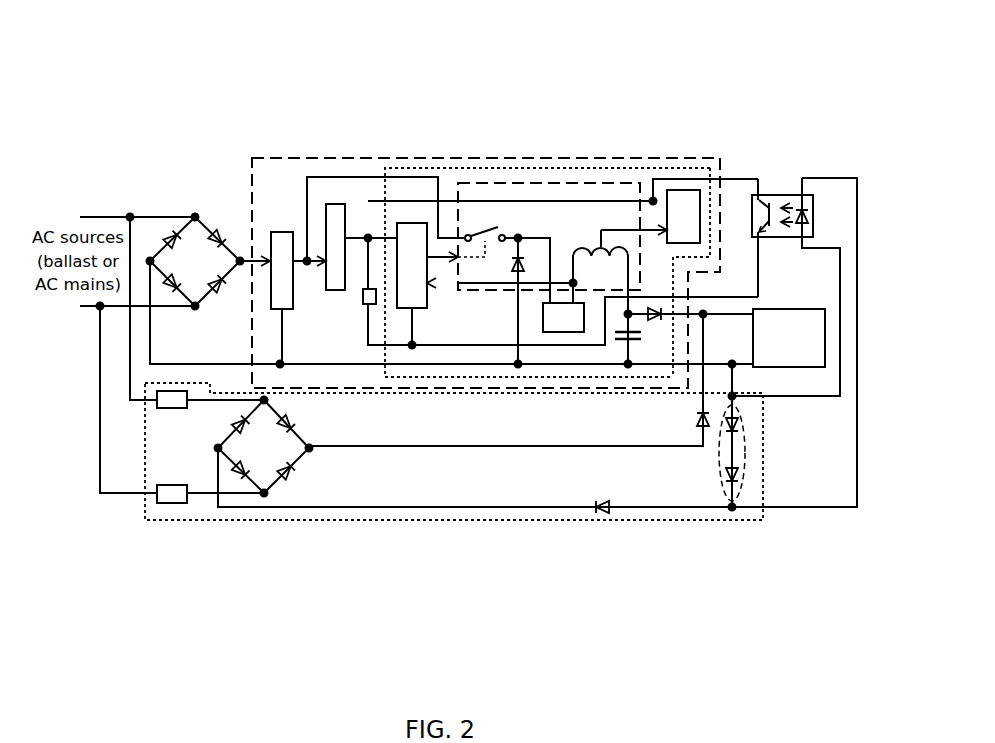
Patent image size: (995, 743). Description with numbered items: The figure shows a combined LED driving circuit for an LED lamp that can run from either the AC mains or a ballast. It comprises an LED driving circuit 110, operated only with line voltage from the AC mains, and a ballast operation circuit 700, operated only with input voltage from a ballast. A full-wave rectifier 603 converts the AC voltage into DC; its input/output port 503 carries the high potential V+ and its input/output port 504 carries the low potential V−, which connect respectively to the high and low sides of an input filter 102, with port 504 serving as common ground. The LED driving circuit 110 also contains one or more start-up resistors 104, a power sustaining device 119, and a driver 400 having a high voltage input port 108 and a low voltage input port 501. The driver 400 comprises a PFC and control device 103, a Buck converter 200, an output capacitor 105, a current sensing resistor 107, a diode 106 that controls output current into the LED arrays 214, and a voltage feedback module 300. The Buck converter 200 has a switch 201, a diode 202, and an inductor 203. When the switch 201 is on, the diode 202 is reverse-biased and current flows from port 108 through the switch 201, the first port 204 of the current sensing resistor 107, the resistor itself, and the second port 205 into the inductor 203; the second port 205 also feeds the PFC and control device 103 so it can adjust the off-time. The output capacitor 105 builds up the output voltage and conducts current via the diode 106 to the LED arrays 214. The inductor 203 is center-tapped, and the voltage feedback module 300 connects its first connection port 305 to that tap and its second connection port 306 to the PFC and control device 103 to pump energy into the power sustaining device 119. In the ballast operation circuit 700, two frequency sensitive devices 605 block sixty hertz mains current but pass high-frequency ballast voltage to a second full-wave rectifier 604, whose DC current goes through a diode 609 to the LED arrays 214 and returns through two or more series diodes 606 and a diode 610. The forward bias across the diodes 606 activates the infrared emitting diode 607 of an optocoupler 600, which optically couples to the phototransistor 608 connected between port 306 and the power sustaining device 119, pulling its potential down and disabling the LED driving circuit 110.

The LED driving circuit 110 is at (471, 145).
The switch 201 is at (476, 230).
The driver 400 is at (497, 158).
The Buck converter 200 is at (563, 171).
The first port of the current sensing resistor 204 is at (518, 235).
The inductor 203 is at (590, 247).
The second connection port 306 is at (640, 202).
The first connection port 305 is at (655, 228).
The voltage feedback module 300 is at (695, 187).
The phototransistor 608 is at (768, 203).
The optocoupler 600 is at (784, 179).
The infrared emitting diode 607 is at (802, 208).
The high voltage input port 108 is at (305, 258).
The low voltage input port 501 is at (367, 237).
The input filter 102 is at (283, 230).
The input/output port 503 is at (238, 258).
The full-wave rectifier 603 is at (158, 219).
The input/output port 504 is at (152, 265).
The start-up resistors 104 is at (330, 290).
The power sustaining device 119 is at (373, 307).
The power factor correction and control device 103 is at (425, 308).
The diode 202 is at (518, 268).
The current sensing resistor 107 is at (567, 333).
The second port of the current sensing resistor 205 is at (573, 280).
The output capacitor 105 is at (625, 345).
The diode 106 is at (658, 322).
The LED arrays 214 is at (790, 370).
The diode 609 is at (698, 430).
The diodes connected in series 606 is at (742, 478).
The diode 610 is at (603, 517).
The second full-wave rectifier 604 is at (307, 486).
The frequency sensitive devices 605 is at (178, 410).
The ballast operation circuit 700 is at (440, 534).